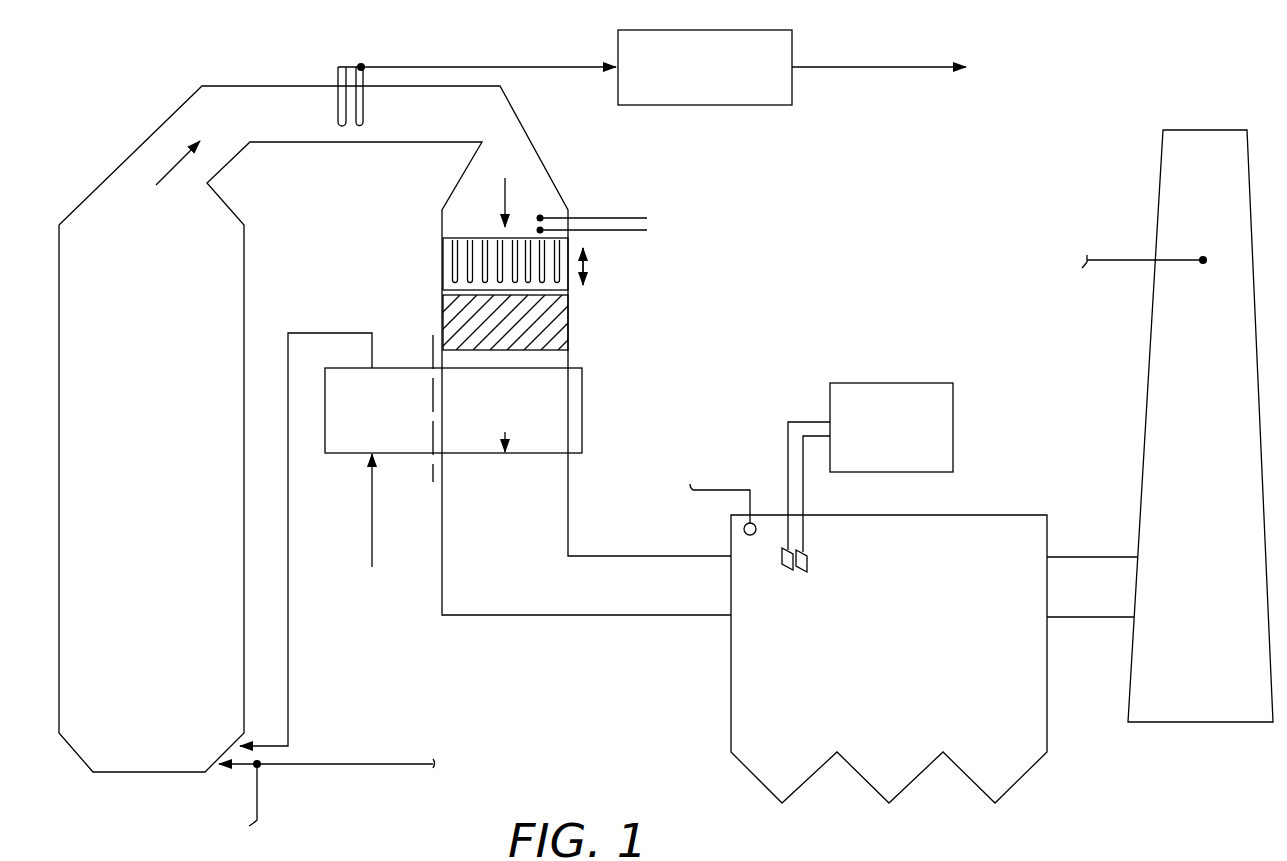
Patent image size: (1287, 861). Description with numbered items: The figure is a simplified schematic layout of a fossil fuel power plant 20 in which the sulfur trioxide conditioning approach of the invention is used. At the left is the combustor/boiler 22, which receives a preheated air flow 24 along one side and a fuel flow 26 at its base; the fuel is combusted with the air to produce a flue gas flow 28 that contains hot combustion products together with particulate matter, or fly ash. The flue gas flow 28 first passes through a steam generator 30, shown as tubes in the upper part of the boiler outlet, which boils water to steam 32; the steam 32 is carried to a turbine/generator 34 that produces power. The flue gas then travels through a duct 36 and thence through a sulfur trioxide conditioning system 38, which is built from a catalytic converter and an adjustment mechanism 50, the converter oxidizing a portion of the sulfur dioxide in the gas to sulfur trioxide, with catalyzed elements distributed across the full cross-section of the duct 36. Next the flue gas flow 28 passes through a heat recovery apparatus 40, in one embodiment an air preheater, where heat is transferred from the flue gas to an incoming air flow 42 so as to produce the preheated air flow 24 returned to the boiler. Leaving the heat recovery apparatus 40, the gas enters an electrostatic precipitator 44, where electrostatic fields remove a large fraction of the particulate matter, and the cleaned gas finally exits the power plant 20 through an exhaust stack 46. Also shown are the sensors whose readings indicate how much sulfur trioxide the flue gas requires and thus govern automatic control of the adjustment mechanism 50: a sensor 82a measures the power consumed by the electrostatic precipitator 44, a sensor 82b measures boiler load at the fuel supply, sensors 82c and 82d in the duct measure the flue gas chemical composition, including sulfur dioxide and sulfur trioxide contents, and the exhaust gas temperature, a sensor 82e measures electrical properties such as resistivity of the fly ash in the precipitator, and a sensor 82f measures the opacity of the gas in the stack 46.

The fossil fuel power plant 20 is at (818, 255).
The combustor/boiler 22 is at (130, 773).
The preheated air flow 24 is at (288, 680).
The fuel flow 26 is at (410, 764).
The flue gas flow 28 is at (172, 170).
The steam generator 30 is at (312, 97).
The steam 32 is at (565, 69).
The turbine/generator 34 is at (730, 105).
The duct 36 is at (548, 170).
The sulfur trioxide conditioning system 38 is at (613, 285).
The heat recovery apparatus 40 is at (582, 380).
The incoming air flow 42 is at (372, 556).
The electrostatic precipitator 44 is at (731, 688).
The exhaust stack 46 is at (1143, 434).
The adjustment mechanism 50 is at (443, 265).
The sensor 82a is at (897, 383).
The sensor 82b is at (257, 805).
The sensor 82c is at (646, 217).
The sensor 82d is at (647, 230).
The sensor 82e is at (744, 530).
The sensor 82f is at (1111, 258).